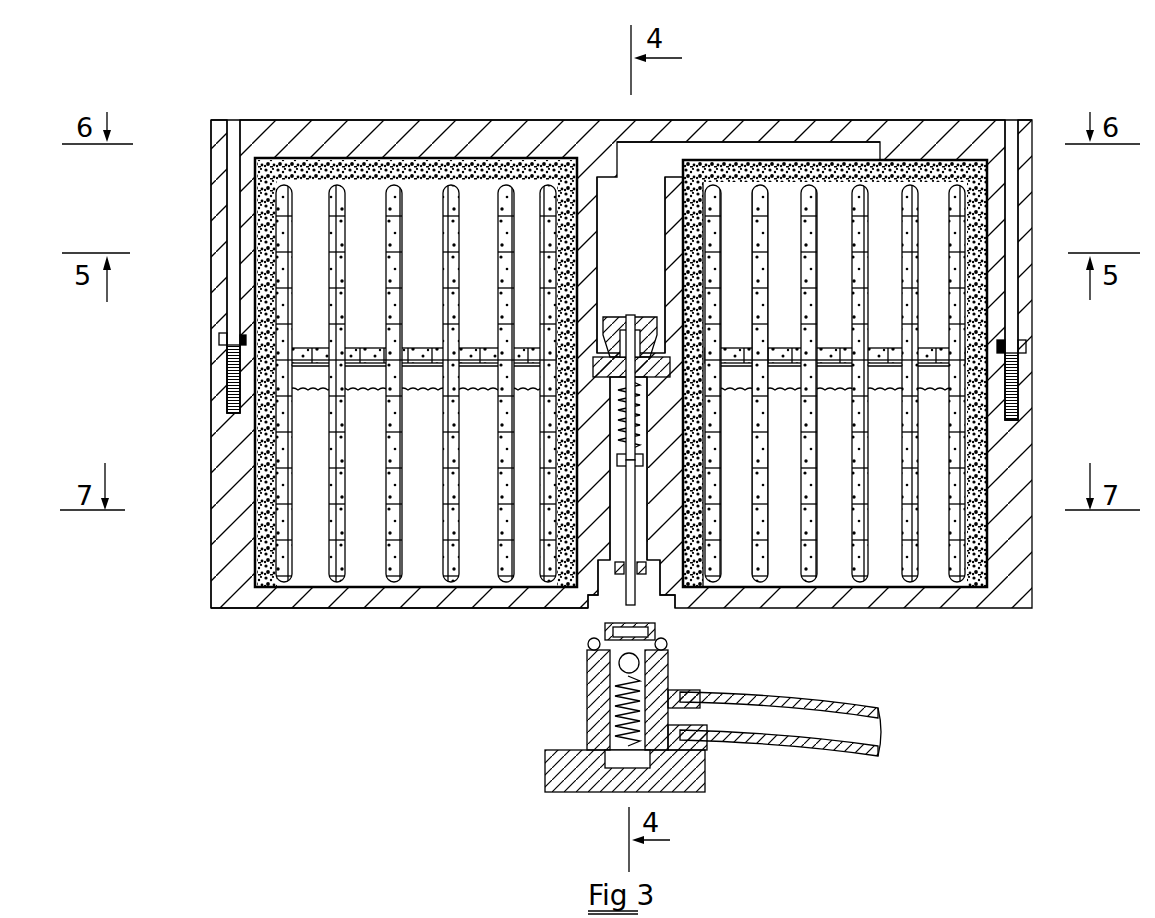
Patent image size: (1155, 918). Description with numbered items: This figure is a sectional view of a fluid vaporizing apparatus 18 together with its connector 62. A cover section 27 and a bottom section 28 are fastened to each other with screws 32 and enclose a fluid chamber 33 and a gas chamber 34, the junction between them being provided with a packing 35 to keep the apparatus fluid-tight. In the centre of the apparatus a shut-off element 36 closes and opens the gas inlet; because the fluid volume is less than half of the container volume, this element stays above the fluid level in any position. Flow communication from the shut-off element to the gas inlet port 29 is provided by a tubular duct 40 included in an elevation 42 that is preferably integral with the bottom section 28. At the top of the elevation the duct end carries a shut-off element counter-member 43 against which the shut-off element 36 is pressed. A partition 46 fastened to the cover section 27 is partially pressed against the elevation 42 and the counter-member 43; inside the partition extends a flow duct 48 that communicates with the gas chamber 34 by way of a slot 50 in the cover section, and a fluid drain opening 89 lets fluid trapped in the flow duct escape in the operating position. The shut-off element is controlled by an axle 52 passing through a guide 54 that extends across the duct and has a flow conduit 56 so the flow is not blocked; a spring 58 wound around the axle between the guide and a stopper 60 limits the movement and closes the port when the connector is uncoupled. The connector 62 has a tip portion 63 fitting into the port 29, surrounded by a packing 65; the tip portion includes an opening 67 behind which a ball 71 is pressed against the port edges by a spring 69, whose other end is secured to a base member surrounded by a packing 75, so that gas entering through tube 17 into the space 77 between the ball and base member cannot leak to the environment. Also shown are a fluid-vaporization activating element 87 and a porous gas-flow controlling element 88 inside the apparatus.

The tube 17 is at (862, 752).
The fluid vaporizing apparatus 18 is at (402, 617).
The cover section 27 is at (217, 245).
The bottom section 28 is at (240, 553).
The gas inlet port 29 is at (604, 600).
The screws 32 is at (233, 205).
The fluid chamber 33 is at (312, 558).
The gas chamber 34 is at (362, 197).
The packing 35 is at (245, 340).
The shut-off element 36 is at (620, 315).
The tubular duct 40 is at (637, 528).
The elevation 42 is at (597, 535).
The shut-off element counter-member 43 is at (600, 355).
The partition 46 is at (673, 212).
The flow duct 48 is at (650, 173).
The slot 50 is at (785, 152).
The axle 52 is at (656, 628).
The guide 54 is at (660, 562).
The flow conduit 56 is at (614, 604).
The spring 58 is at (638, 433).
The stopper 60 is at (643, 462).
The connector 62 is at (540, 779).
The tip portion 63 is at (597, 705).
The packing 65 is at (666, 648).
The opening 67 is at (658, 634).
The spring 69 is at (624, 722).
The ball 71 is at (597, 672).
The packing 75 is at (700, 775).
The space 77 is at (613, 738).
The fluid-vaporization activating element 87 is at (410, 180).
The gas-flow controlling element 88 is at (478, 163).
The fluid drain opening 89 is at (702, 334).